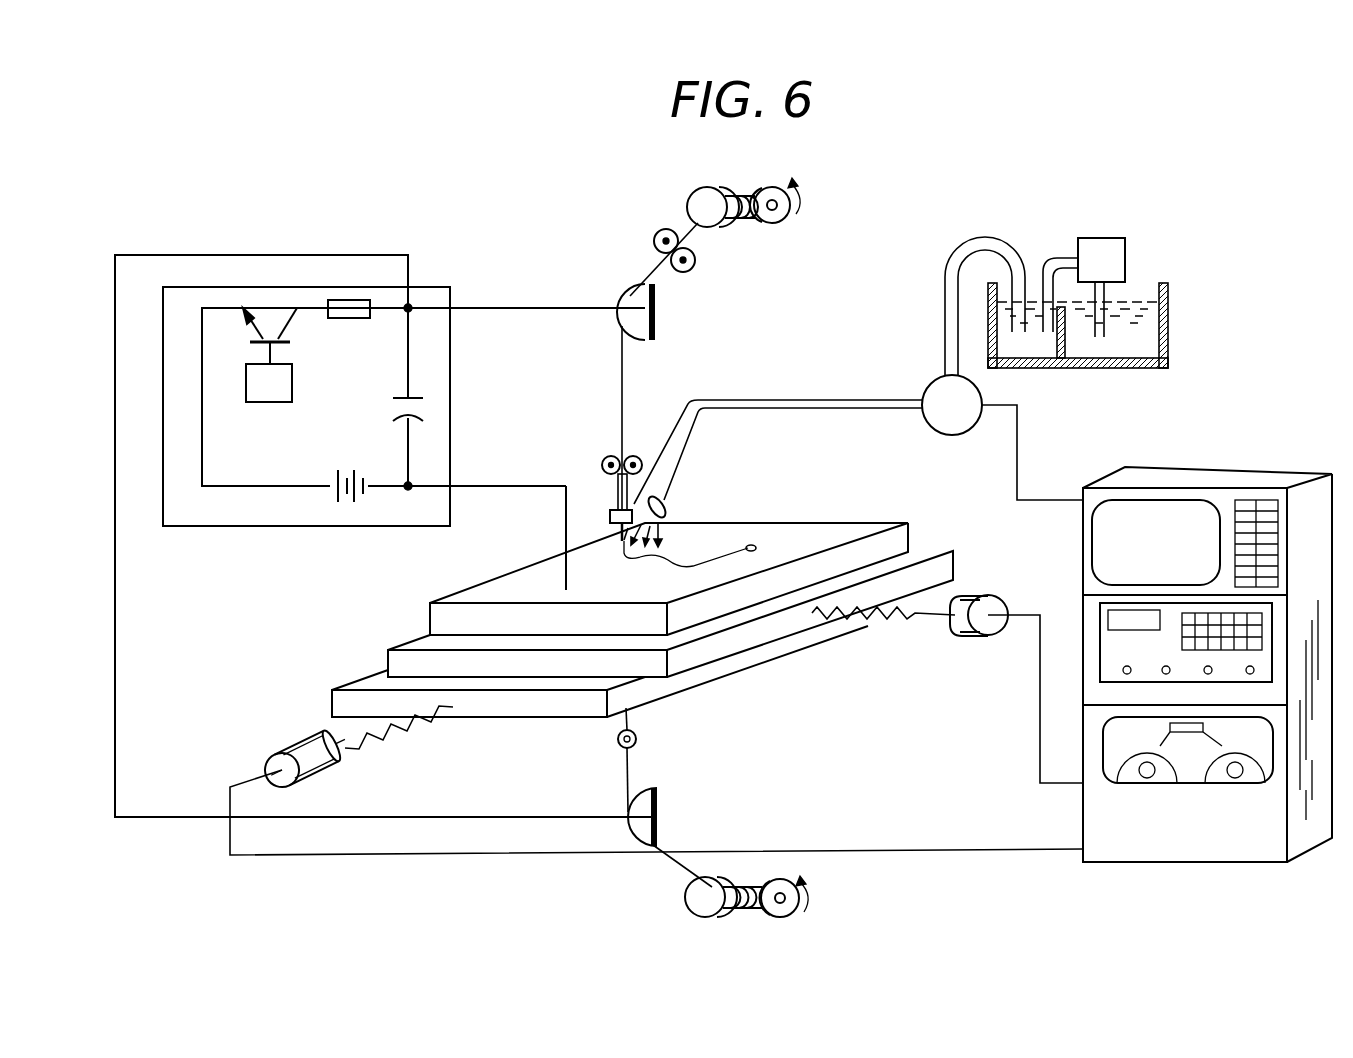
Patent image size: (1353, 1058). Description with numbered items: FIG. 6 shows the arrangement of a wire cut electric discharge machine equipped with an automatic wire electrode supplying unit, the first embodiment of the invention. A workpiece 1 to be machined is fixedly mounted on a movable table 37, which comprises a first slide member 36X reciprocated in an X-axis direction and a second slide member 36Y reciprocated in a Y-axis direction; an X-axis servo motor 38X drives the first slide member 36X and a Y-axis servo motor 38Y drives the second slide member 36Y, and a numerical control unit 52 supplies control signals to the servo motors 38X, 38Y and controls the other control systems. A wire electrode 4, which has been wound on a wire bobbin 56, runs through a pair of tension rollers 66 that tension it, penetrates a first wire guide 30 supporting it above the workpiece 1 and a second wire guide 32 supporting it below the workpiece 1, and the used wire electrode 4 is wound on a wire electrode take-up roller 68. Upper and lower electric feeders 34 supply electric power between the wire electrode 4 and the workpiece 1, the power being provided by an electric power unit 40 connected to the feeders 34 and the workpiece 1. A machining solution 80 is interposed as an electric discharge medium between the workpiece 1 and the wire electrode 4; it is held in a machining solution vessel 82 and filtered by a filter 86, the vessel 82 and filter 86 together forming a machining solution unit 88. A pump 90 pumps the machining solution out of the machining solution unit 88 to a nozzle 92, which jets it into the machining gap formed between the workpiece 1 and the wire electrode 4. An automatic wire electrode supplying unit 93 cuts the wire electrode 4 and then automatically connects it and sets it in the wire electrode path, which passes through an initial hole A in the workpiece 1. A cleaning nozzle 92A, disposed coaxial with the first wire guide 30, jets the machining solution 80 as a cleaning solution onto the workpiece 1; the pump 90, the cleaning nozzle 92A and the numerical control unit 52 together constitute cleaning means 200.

The workpiece 1 is at (852, 522).
The wire electrode 4 is at (622, 380).
The first wire guide 30 is at (616, 524).
The second wire guide 32 is at (637, 736).
The upper and lower electric feeders 34 is at (658, 321).
The first slide member 36X is at (956, 556).
The second slide member 36Y is at (336, 698).
The movable table 37 is at (798, 651).
The X-axis servo motor 38X is at (993, 598).
The Y-axis servo motor 38Y is at (330, 775).
The electric power unit 40 is at (448, 286).
The numerical control unit 52 is at (1222, 478).
The wire bobbin 56 is at (781, 222).
The tension rollers 66 is at (695, 270).
The wire electrode take-up roller 68 is at (778, 880).
The machining solution 80 is at (666, 533).
The machining solution vessel 82 is at (1170, 320).
The filter 86 is at (1112, 238).
The machining solution unit 88 is at (1092, 370).
The pump 90 is at (948, 436).
The nozzle 92 is at (667, 504).
The cleaning nozzle 92A is at (612, 508).
The automatic wire electrode supplying unit 93 is at (636, 455).
The cleaning means 200 is at (884, 400).
The initial hole A is at (752, 546).